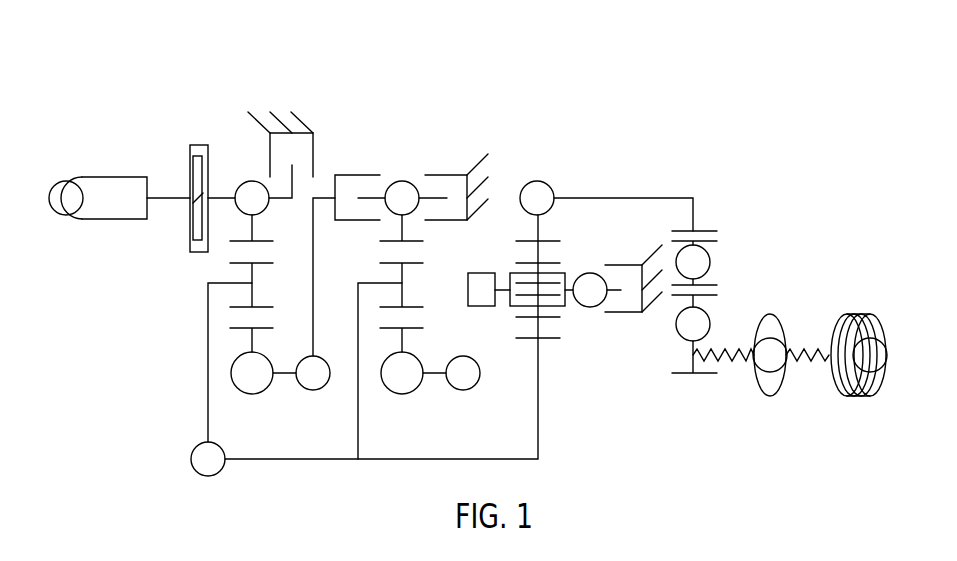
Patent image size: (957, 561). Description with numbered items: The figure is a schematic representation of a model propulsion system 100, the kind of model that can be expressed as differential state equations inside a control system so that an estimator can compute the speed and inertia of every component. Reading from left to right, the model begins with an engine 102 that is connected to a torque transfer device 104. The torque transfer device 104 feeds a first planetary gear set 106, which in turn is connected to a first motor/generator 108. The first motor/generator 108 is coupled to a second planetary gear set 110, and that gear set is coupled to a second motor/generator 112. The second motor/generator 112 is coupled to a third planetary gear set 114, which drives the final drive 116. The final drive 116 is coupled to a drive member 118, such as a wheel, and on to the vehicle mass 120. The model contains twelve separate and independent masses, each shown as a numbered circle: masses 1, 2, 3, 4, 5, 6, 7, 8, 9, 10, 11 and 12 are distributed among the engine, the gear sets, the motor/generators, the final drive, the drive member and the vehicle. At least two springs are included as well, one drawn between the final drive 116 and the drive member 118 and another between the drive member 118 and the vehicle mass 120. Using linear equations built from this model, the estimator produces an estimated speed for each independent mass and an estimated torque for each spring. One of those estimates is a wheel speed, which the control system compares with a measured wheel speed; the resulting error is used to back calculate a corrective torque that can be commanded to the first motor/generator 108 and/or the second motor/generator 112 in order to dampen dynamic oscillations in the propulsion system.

The model propulsion system 100 is at (607, 78).
The engine 102 is at (107, 158).
The torque transfer device 104 is at (200, 142).
The first planetary gear set 106 is at (242, 177).
The first motor/generator 108 is at (288, 395).
The second planetary gear set 110 is at (402, 162).
The second motor/generator 112 is at (435, 395).
The third planetary gear set 114 is at (567, 182).
The final drive 116 is at (728, 260).
The drive member 118 is at (770, 308).
The vehicle mass 120 is at (873, 308).
The independent mass 1 is at (66, 198).
The independent mass 2 is at (252, 198).
The independent mass 3 is at (463, 373).
The independent mass 4 is at (313, 373).
The independent mass 5 is at (590, 290).
The independent mass 6 is at (537, 198).
The independent mass 7 is at (693, 262).
The independent mass 8 is at (693, 324).
The independent mass 9 is at (770, 355).
The independent mass 10 is at (870, 355).
The independent mass 11 is at (364, 345).
The independent mass 12 is at (402, 198).